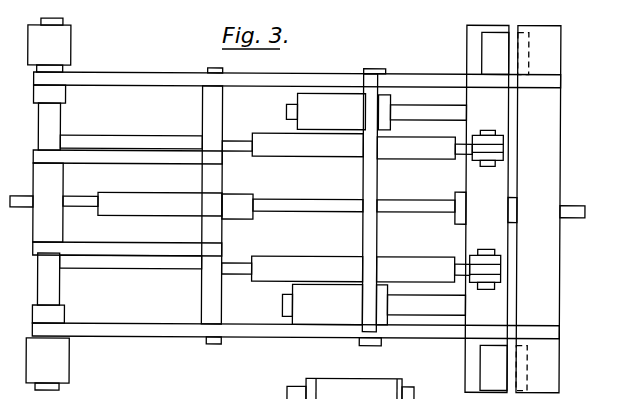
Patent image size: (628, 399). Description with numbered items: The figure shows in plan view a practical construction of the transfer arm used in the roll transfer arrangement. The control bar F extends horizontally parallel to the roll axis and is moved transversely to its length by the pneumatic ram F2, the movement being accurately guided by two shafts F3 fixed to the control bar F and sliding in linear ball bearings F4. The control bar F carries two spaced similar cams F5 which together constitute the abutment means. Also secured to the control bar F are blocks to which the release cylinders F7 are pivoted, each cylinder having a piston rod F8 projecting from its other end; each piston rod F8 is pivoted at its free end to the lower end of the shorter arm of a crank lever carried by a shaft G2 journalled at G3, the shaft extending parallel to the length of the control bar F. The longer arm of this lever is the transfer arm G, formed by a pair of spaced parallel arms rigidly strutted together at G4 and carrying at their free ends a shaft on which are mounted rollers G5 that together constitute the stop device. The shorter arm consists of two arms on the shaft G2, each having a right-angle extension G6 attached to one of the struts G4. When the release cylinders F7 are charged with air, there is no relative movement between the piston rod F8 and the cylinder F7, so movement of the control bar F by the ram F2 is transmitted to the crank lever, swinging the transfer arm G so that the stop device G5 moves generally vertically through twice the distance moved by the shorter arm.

The transfer arm G is at (139, 74).
The shaft G2 is at (63, 24).
The journal G3 is at (58, 48).
The strut G4 is at (370, 312).
The rollers G5 is at (546, 65).
The extension G6 is at (92, 288).
The control bar F is at (488, 193).
The pneumatic ram F2 is at (127, 197).
The shafts F3 is at (412, 343).
The linear ball bearings F4 is at (317, 343).
The cams F5 is at (485, 377).
The release cylinder F7 is at (315, 152).
The piston rod F8 is at (142, 284).